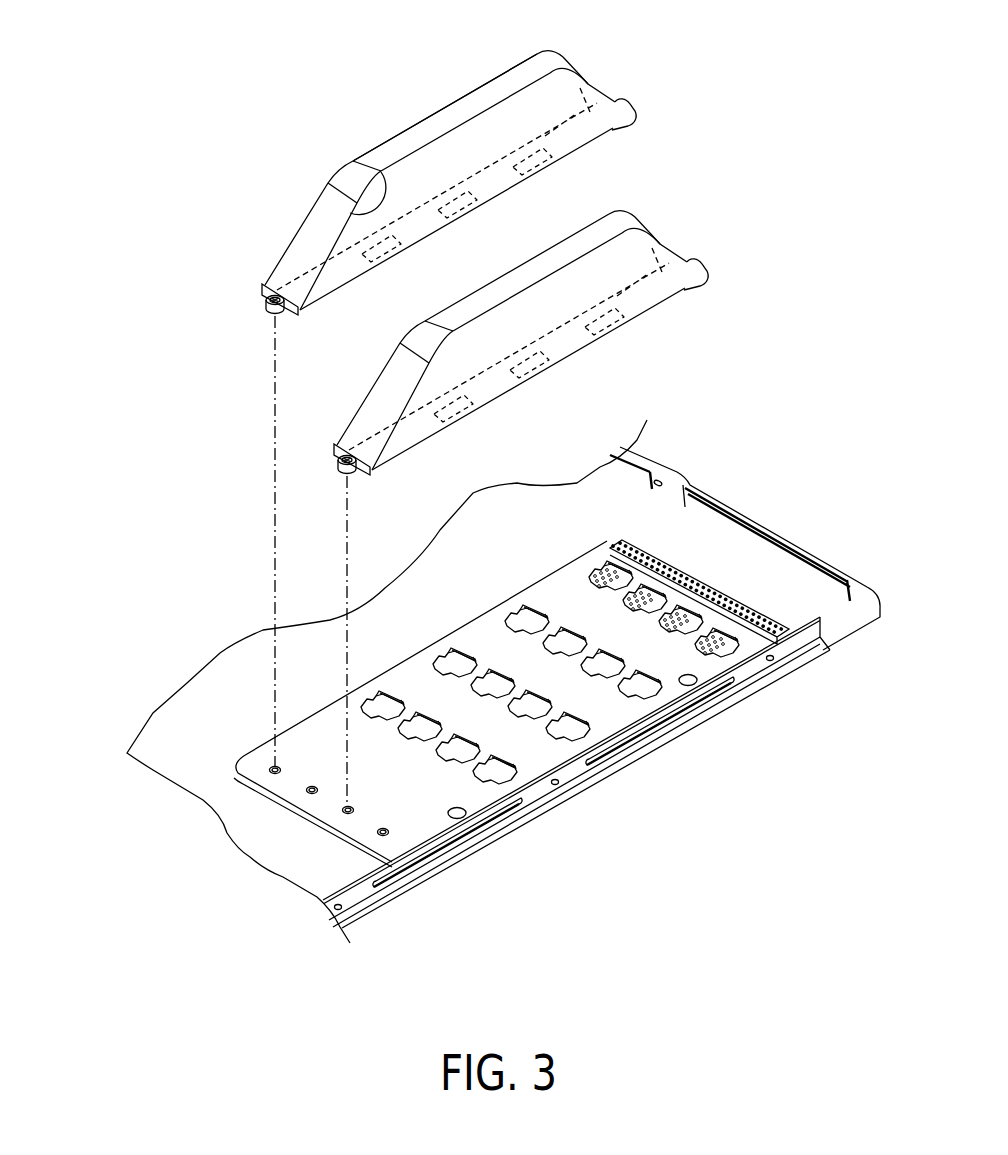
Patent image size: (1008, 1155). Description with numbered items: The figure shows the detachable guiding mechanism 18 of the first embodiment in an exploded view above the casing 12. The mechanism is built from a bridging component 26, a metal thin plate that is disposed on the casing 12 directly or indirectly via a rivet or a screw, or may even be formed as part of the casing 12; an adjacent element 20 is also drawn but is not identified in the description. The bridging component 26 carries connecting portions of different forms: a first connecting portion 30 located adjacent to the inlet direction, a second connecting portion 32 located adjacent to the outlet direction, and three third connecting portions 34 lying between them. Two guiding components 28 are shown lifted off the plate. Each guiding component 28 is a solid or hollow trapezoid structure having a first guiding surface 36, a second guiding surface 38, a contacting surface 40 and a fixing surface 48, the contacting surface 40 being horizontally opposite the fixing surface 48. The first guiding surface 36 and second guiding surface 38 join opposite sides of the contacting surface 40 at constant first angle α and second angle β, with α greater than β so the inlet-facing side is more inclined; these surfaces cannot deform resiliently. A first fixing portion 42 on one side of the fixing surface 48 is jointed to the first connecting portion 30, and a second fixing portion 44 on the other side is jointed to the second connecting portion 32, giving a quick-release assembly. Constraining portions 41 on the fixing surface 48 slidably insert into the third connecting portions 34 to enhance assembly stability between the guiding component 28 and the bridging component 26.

The casing 12 is at (787, 593).
The detachable guiding mechanism 18 is at (107, 147).
The connector 20 is at (668, 566).
The bridging component 26 is at (460, 686).
The guiding component 28 is at (439, 416).
The first connecting portion 30 is at (388, 834).
The second connecting portion 32 is at (730, 640).
The third connecting portion 34 is at (660, 680).
The first guiding surface 36 is at (306, 230).
The second guiding surface 38 is at (588, 78).
The contacting surface 40 is at (393, 147).
The constraining portion 41 is at (384, 252).
The first fixing portion 42 is at (266, 303).
The second fixing portion 44 is at (623, 100).
The fixing surface 48 is at (310, 281).